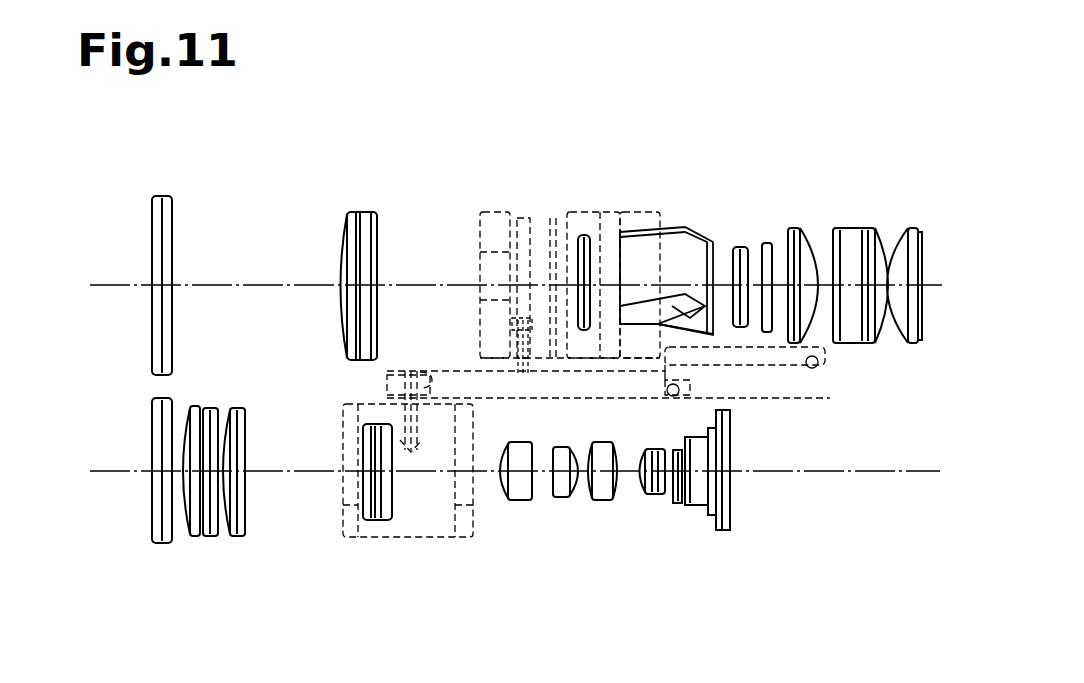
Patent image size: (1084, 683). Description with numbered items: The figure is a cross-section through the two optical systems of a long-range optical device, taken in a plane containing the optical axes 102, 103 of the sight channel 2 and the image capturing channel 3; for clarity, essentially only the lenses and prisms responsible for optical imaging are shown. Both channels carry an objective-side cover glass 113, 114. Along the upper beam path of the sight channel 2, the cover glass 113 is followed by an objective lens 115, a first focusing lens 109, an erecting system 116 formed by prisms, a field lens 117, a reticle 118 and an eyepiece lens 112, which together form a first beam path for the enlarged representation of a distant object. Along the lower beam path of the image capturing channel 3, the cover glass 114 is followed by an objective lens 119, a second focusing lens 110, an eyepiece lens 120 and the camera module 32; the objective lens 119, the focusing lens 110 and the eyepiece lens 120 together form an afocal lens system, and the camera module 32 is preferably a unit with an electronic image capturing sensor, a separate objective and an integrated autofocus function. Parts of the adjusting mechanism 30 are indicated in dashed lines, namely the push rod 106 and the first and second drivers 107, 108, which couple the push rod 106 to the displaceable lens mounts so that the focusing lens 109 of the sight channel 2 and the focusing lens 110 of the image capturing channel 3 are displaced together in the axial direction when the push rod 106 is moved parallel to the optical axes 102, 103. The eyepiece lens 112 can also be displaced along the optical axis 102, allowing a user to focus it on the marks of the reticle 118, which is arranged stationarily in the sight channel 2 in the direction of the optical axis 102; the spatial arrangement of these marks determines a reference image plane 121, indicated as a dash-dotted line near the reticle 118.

The sight channel 2 is at (112, 318).
The image capturing channel 3 is at (112, 527).
The adjusting mechanism 30 is at (790, 378).
The camera module 32 is at (700, 525).
The optical axis 102 is at (113, 283).
The optical axis 103 is at (113, 469).
The push rod 106 is at (625, 405).
The first driver 107 is at (514, 371).
The second driver 108 is at (385, 395).
The first focusing lens 109 is at (584, 228).
The second focusing lens 110 is at (380, 538).
The eyepiece lens 112 is at (925, 222).
The cover glass 113 is at (150, 188).
The cover glass 114 is at (163, 556).
The objective lens 115 is at (357, 196).
The erecting system 116 is at (680, 228).
The field lens 117 is at (738, 240).
The reticle 118 is at (775, 238).
The objective lens 119 is at (249, 540).
The eyepiece lens 120 is at (666, 510).
The reference image plane 121 is at (772, 228).